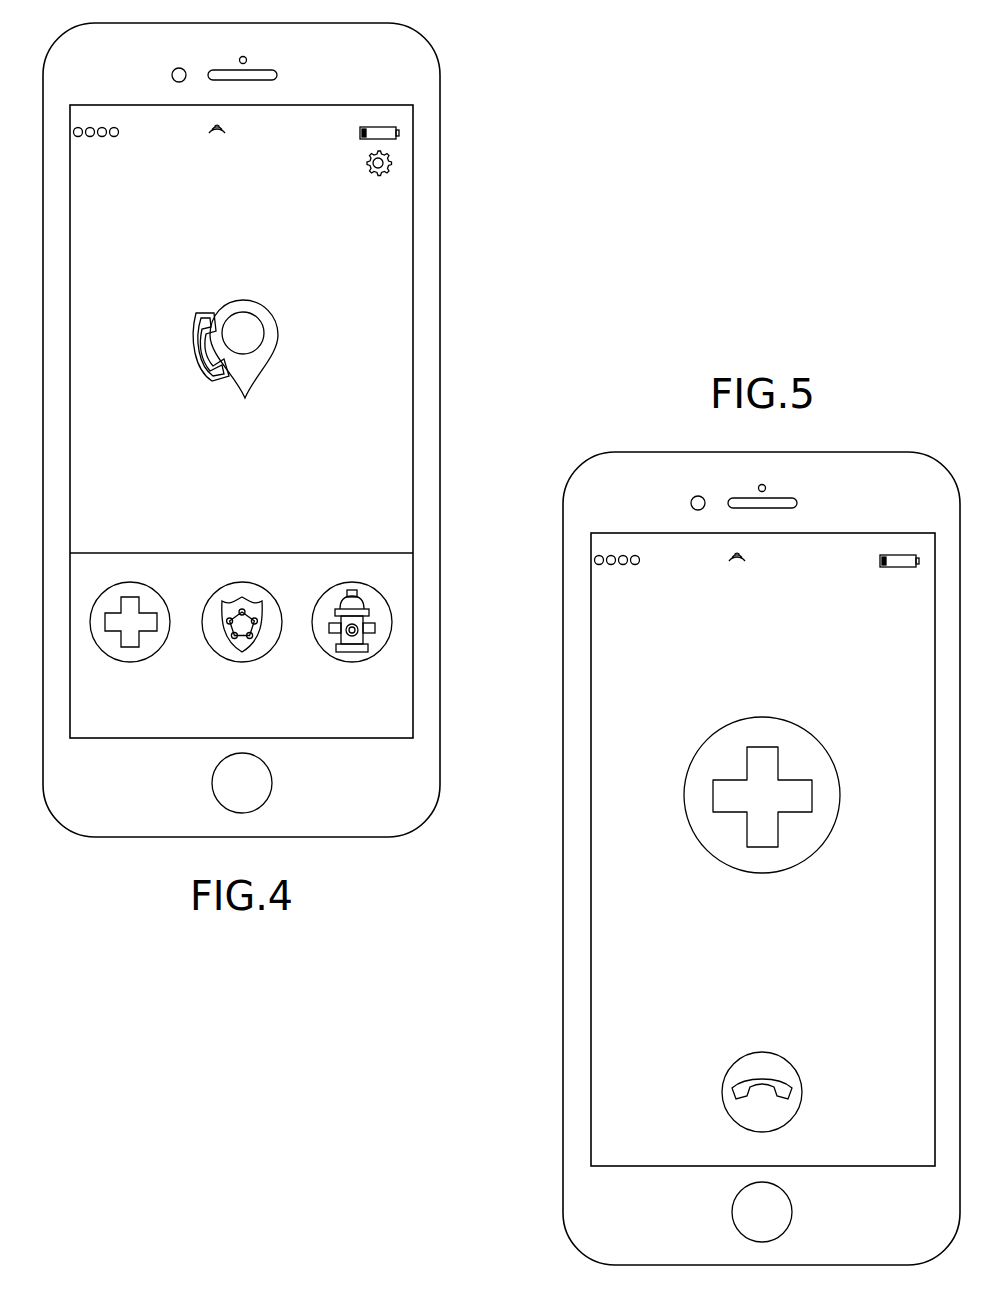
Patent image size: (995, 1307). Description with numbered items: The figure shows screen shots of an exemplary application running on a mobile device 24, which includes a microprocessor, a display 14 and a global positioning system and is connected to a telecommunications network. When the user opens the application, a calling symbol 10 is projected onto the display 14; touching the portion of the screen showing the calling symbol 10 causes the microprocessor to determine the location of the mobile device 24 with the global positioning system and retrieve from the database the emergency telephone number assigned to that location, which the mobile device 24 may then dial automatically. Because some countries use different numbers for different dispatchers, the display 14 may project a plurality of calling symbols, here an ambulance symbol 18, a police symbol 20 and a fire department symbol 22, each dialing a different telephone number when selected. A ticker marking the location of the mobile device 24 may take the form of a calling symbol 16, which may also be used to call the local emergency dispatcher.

In FIG. 4, the mobile device 24 is at (398, 63).
In FIG. 5, the mobile device 24 is at (612, 480).
In FIG. 4, the display 14 is at (370, 264).
In FIG. 5, the display 14 is at (627, 982).
In FIG. 4, the calling symbol 10 is at (258, 304).
In FIG. 4, the ambulance symbol 18 is at (128, 662).
In FIG. 5, the ambulance symbol 18 is at (797, 868).
In FIG. 4, the police symbol 20 is at (240, 662).
In FIG. 4, the fire department symbol 22 is at (350, 662).
In FIG. 5, the calling symbol 16 is at (760, 1062).